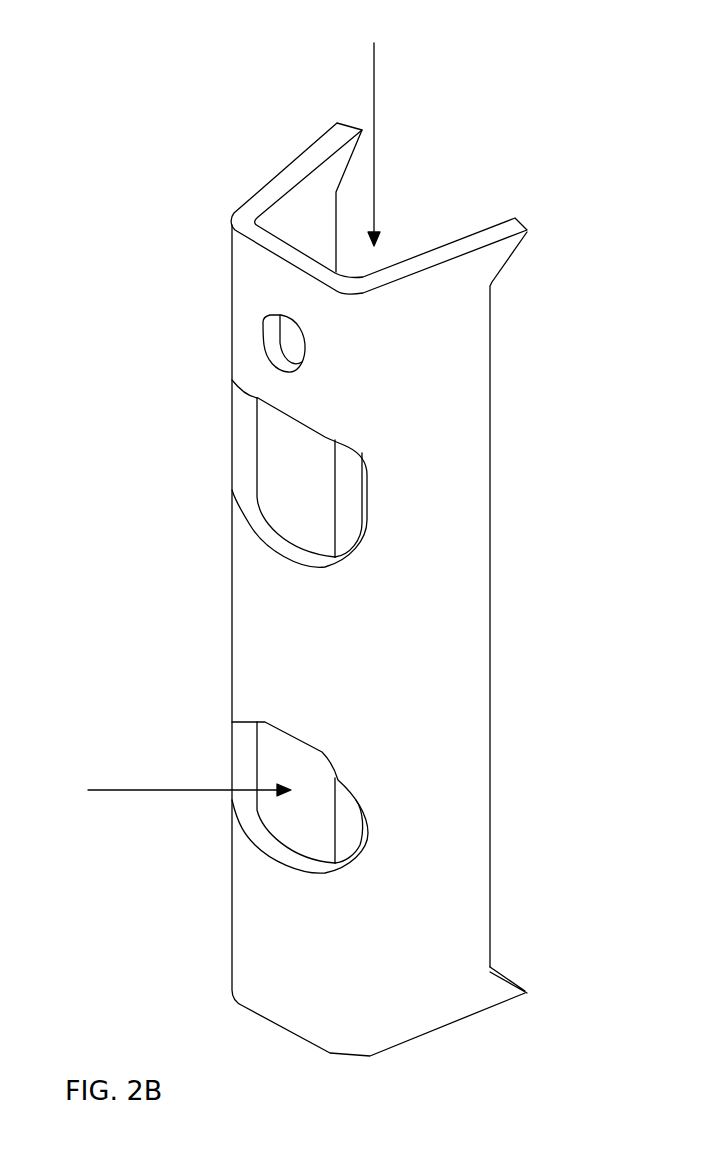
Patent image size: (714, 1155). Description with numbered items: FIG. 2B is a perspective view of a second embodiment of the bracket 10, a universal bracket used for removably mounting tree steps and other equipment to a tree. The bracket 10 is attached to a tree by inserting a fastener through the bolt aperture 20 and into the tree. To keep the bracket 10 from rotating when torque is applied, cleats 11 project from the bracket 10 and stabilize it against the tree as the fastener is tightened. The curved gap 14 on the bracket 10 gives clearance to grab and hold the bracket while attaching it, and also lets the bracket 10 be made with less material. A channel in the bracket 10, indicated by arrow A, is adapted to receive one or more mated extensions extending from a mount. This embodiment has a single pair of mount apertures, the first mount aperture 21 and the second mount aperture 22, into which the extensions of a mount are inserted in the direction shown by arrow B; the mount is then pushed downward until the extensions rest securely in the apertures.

The bracket 10 is at (232, 625).
The cleats 11 is at (345, 122).
The curved gap 14 is at (495, 766).
The bolt aperture 20 is at (297, 343).
The first mount aperture 21 is at (273, 462).
The second mount aperture 22 is at (243, 742).
The arrow A is at (371, 129).
The arrow B is at (173, 791).